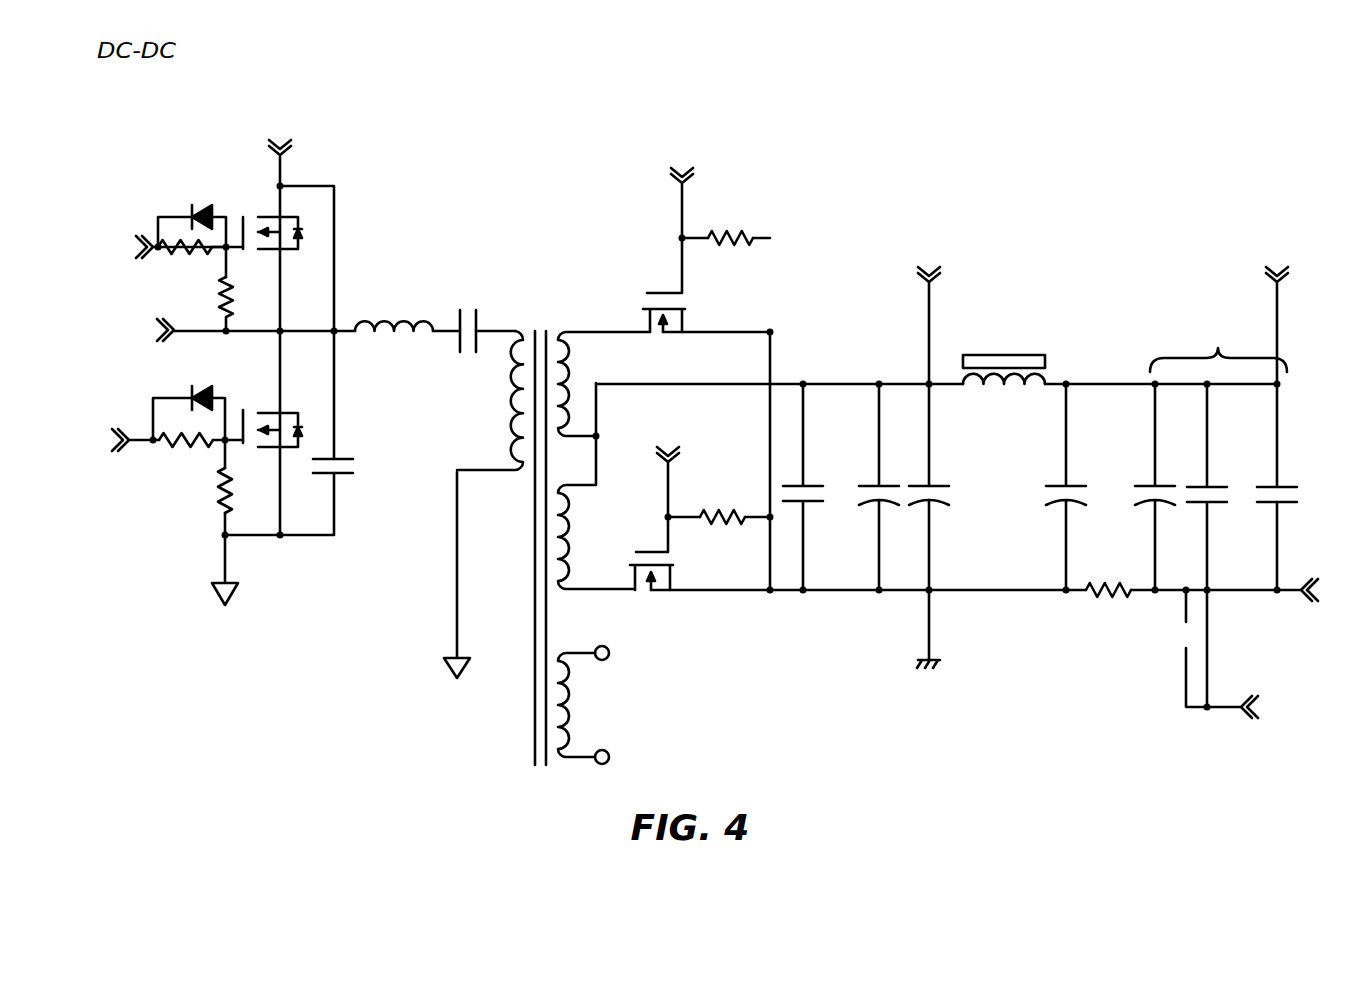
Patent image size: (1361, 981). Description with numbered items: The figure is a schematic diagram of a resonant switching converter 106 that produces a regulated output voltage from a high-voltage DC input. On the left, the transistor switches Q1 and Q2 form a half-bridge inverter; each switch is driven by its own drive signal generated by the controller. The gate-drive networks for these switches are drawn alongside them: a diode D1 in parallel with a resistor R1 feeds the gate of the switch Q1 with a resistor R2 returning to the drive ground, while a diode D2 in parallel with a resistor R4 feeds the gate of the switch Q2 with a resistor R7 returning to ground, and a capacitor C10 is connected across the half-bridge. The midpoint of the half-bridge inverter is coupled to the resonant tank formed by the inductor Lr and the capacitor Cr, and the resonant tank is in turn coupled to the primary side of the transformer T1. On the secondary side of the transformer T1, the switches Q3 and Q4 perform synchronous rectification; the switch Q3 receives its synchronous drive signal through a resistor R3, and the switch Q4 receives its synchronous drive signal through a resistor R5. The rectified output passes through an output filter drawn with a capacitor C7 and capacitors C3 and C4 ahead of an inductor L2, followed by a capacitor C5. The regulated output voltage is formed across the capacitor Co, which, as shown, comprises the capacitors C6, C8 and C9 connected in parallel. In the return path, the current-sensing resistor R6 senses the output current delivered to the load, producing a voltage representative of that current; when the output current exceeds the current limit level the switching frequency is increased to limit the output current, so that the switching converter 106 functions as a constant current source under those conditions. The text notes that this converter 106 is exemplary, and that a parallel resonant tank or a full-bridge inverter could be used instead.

The resonant switching converter 106 is at (1154, 126).
The diode D1 is at (204, 203).
The resistor R1 is at (185, 262).
The resistor R2 is at (241, 304).
The transistor switch Q1 is at (289, 220).
The diode D2 is at (204, 385).
The resistor R4 is at (186, 455).
The resistor R7 is at (242, 490).
The transistor switch Q2 is at (289, 412).
The capacitor C10 is at (358, 470).
The inductor Lr is at (394, 341).
The capacitor Cr is at (473, 312).
The transformer T1 is at (553, 527).
The switch Q3 is at (682, 308).
The resistor R3 is at (730, 224).
The switch Q4 is at (651, 599).
The resistor R5 is at (722, 502).
The capacitor C7 is at (811, 487).
The capacitor C3 is at (871, 487).
The capacitor C4 is at (937, 509).
The output inductor L2 is at (1004, 357).
The capacitor C5 is at (1074, 487).
The capacitor Co is at (1218, 342).
The capacitor C6 is at (1162, 487).
The capacitor C8 is at (1216, 545).
The capacitor C9 is at (1296, 498).
The current-sensing resistor R6 is at (1108, 609).